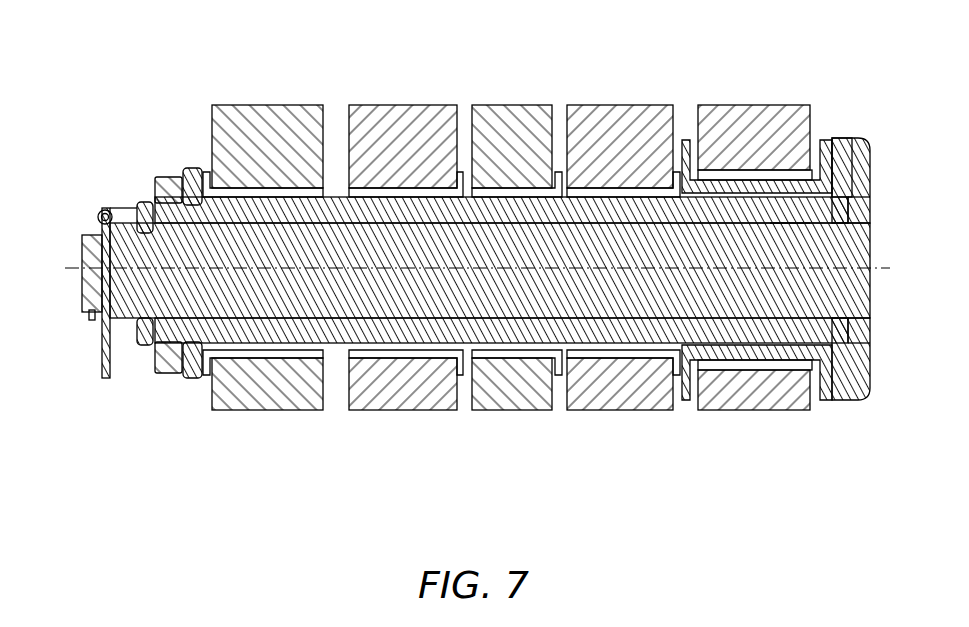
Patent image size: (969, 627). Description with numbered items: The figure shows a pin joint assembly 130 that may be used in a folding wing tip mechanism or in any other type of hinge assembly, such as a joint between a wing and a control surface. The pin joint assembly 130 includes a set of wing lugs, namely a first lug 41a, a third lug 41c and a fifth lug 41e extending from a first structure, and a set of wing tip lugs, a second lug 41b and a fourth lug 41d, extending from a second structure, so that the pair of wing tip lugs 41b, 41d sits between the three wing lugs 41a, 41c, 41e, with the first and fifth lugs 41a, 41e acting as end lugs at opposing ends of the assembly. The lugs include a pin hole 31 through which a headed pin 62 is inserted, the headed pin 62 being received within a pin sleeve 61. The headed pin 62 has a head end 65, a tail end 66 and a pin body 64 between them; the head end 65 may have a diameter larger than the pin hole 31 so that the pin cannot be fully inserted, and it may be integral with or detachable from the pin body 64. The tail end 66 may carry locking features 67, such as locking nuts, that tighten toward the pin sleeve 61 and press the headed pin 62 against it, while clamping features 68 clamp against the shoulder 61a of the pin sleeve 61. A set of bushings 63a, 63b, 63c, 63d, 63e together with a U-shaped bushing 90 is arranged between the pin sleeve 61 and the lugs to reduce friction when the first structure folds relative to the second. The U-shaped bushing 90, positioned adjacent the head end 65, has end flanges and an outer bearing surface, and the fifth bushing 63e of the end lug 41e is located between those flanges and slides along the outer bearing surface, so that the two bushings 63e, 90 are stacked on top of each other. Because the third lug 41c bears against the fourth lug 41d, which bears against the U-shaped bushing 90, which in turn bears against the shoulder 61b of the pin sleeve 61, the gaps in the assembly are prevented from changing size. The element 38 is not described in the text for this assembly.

The pin joint assembly 130 is at (133, 423).
The pin hole 31 is at (490, 197).
The end plate 38 is at (75, 280).
The first lug 41a is at (272, 390).
The second lug 41b is at (405, 130).
The third lug 41c is at (503, 395).
The fourth lug 41d is at (620, 135).
The fifth lug 41e is at (768, 393).
The pin sleeve 61 is at (830, 360).
The shoulder 61a is at (186, 168).
The shoulder 61b is at (862, 160).
The headed pin 62 is at (790, 280).
The bushing 63a is at (272, 190).
The bushing 63b is at (395, 350).
The bushing 63c is at (528, 353).
The bushing 63d is at (650, 350).
The fifth bushing 63e is at (800, 367).
The pin body 64 is at (790, 235).
The head end 65 is at (855, 248).
The tail end 66 is at (130, 290).
The locking features 67 is at (125, 213).
The clamping features 68 is at (176, 176).
The U-shaped bushing 90 is at (720, 182).